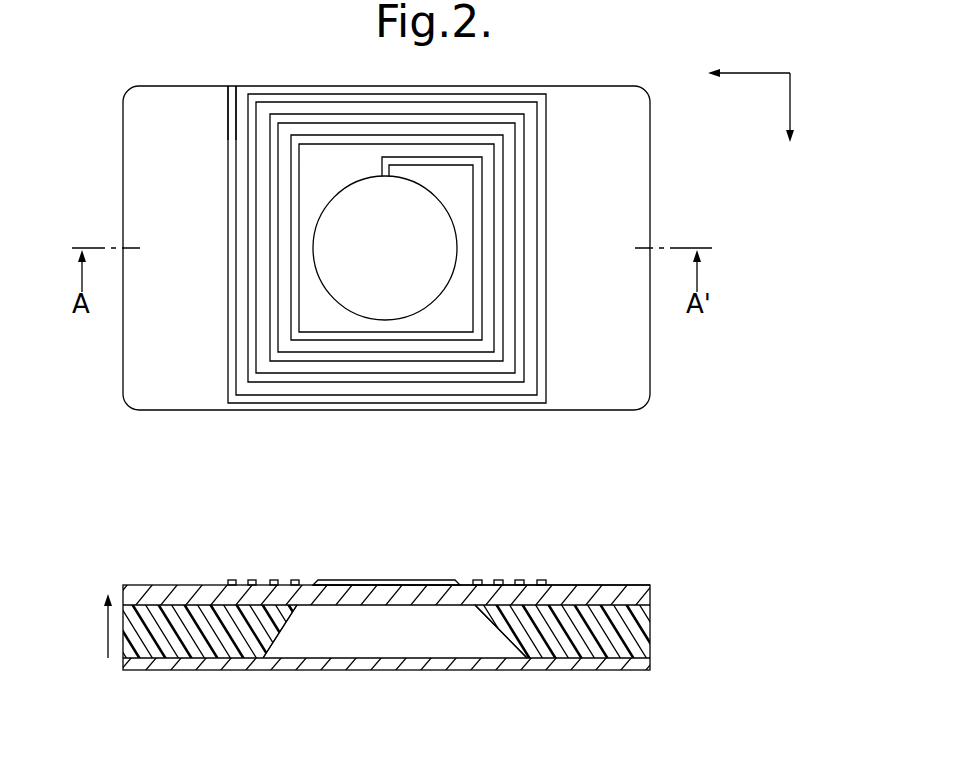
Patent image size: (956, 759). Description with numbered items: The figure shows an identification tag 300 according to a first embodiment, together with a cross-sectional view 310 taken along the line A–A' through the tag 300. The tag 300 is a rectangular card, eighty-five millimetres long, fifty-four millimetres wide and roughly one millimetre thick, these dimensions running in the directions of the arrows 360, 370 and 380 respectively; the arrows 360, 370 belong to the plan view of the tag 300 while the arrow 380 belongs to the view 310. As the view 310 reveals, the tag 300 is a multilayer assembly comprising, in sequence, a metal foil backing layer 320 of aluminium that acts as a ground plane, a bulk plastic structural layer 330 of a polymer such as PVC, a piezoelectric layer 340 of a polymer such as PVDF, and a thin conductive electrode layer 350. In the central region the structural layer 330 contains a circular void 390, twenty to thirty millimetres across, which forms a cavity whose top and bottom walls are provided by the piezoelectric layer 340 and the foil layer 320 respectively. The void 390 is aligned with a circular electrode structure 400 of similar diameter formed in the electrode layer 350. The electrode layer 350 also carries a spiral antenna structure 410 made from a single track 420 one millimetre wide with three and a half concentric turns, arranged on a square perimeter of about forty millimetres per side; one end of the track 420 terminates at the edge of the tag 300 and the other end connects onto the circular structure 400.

The tag 300 is at (104, 90).
The cross-sectional view 310 is at (690, 555).
The metal foil backing layer 320 is at (593, 662).
The bulk plastic structural layer 330 is at (622, 622).
The piezoelectric layer 340 is at (168, 596).
The conductive electrode layer 350 is at (588, 562).
The length direction arrow 360 is at (755, 73).
The width direction arrow 370 is at (823, 103).
The thickness direction arrow 380 is at (108, 634).
The void 390 is at (413, 645).
The circular electrode structure 400 is at (410, 264).
The spiral antenna structure 410 is at (216, 382).
The track 420 is at (432, 383).